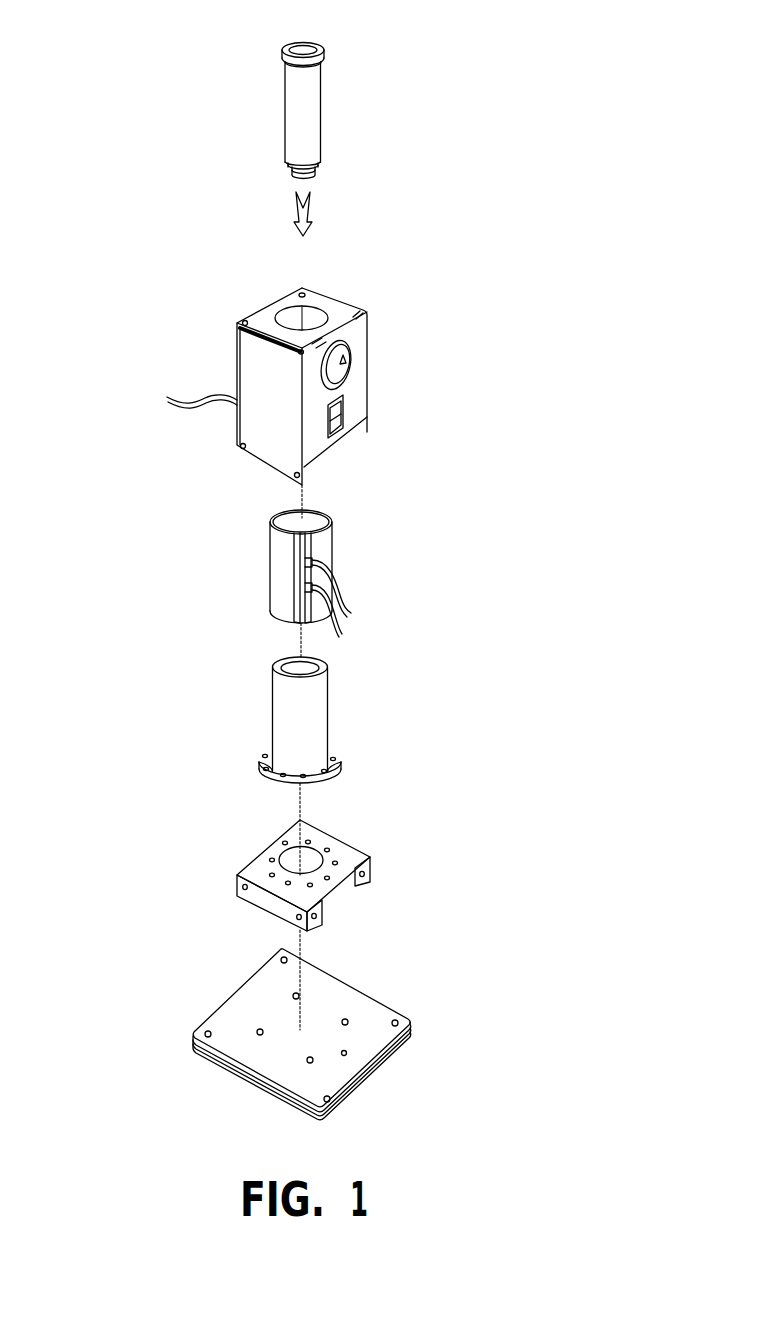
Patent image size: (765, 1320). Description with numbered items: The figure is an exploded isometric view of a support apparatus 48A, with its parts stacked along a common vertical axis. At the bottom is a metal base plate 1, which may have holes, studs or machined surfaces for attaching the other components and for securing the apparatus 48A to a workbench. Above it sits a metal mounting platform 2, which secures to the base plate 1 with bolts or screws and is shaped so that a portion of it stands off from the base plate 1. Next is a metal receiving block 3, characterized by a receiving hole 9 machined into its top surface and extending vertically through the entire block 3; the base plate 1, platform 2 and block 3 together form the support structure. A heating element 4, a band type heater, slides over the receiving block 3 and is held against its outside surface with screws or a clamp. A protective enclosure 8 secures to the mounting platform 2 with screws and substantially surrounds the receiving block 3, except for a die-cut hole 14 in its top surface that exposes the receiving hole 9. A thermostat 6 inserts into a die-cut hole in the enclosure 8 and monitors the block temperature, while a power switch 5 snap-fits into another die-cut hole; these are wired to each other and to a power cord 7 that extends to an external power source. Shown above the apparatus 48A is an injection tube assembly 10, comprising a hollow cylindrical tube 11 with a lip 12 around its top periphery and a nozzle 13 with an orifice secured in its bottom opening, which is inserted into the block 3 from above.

The base plate 1 is at (363, 1048).
The mounting platform 2 is at (340, 890).
The receiving block 3 is at (327, 717).
The heating element 4 is at (335, 547).
The power switch 5 is at (345, 417).
The thermostat 6 is at (345, 375).
The power cord 7 is at (208, 410).
The protective enclosure 8 is at (278, 447).
The receiving hole 9 is at (280, 673).
The injection tube assembly 10 is at (302, 136).
The hollow cylindrical tube 11 is at (302, 118).
The lip 12 is at (327, 52).
The nozzle 13 is at (320, 177).
The die-cut hole 14 is at (330, 320).
The support apparatus 48A is at (247, 704).